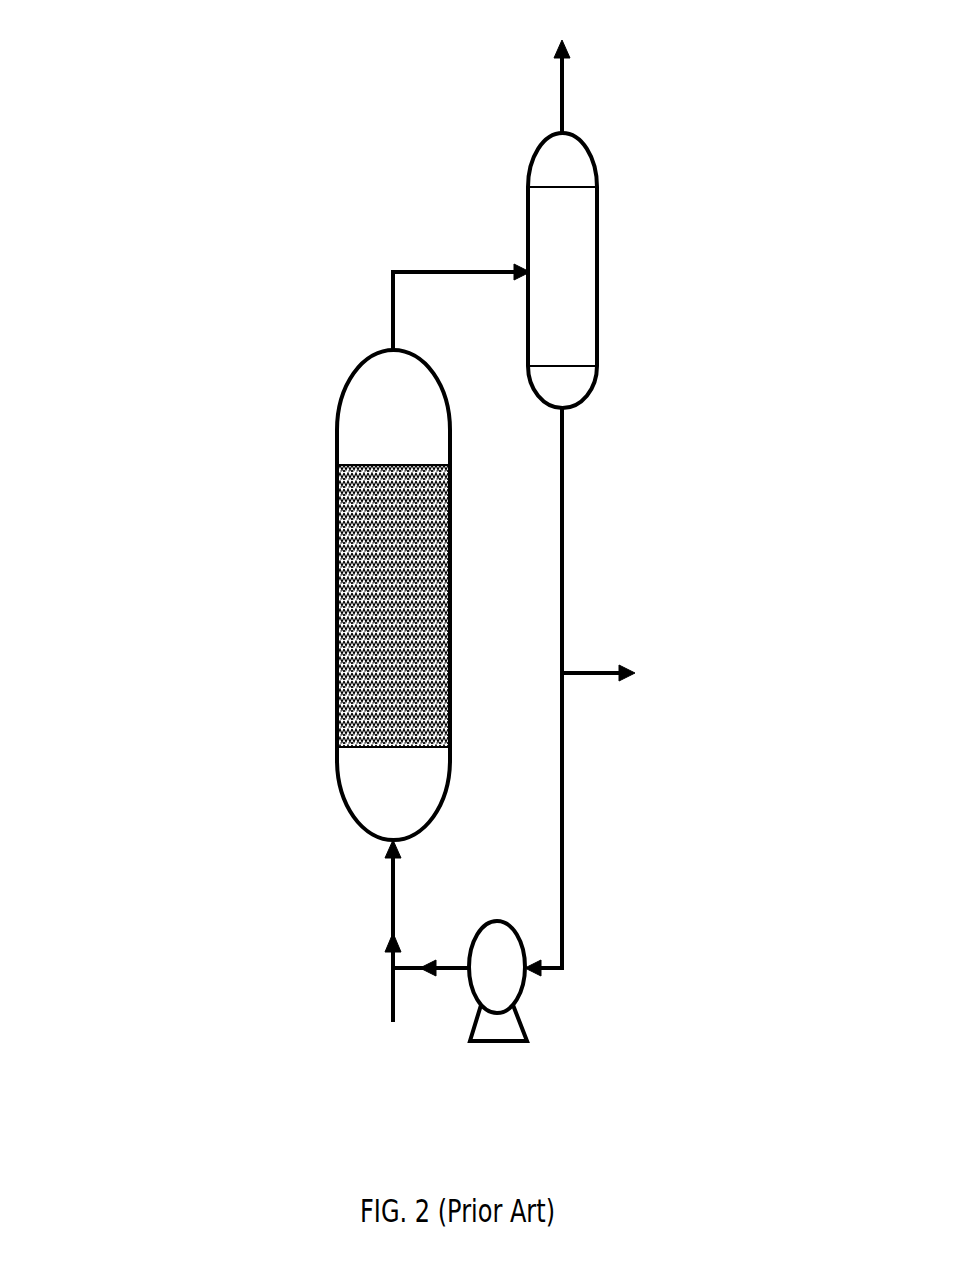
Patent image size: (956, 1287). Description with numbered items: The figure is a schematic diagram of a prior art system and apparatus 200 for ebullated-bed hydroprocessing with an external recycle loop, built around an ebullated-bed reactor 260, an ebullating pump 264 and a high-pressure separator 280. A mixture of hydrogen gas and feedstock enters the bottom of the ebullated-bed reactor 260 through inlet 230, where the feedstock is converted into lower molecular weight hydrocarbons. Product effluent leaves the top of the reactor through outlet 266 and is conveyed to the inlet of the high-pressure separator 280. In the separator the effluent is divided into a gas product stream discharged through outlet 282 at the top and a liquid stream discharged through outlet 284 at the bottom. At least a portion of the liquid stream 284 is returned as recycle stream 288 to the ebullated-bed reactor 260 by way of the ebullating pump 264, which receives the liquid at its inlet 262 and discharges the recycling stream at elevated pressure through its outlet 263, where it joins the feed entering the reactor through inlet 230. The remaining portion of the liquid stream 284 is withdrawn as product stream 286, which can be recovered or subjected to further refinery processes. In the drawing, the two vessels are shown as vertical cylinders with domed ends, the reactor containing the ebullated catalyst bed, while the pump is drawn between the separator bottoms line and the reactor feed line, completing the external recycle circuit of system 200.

The system and apparatus 200 is at (139, 206).
The inlet 230 is at (390, 880).
The ebullated-bed reactor 260 is at (336, 535).
The inlet 262 is at (548, 975).
The outlet 263 is at (458, 975).
The ebullating pump 264 is at (493, 920).
The outlet 266 is at (392, 325).
The high-pressure separator 280 is at (538, 155).
The outlet / gas product stream 282 is at (558, 80).
The outlet / liquid stream 284 is at (560, 522).
The product stream 286 is at (610, 668).
The recycle stream 288 is at (562, 877).